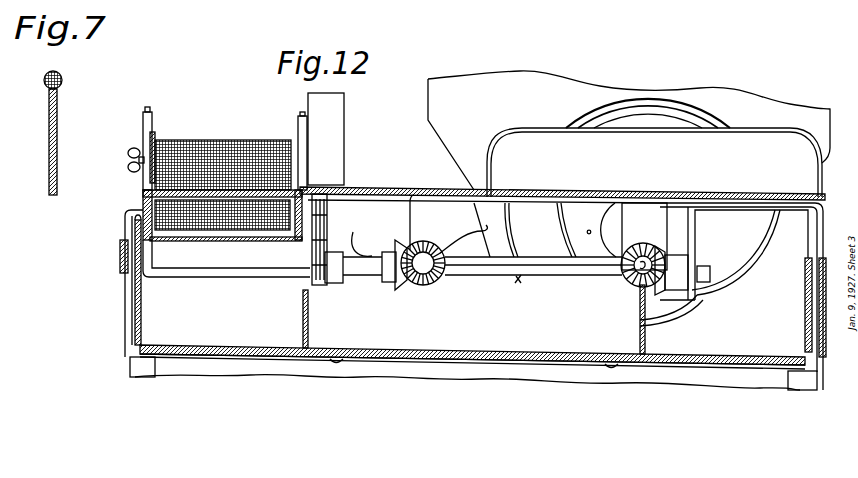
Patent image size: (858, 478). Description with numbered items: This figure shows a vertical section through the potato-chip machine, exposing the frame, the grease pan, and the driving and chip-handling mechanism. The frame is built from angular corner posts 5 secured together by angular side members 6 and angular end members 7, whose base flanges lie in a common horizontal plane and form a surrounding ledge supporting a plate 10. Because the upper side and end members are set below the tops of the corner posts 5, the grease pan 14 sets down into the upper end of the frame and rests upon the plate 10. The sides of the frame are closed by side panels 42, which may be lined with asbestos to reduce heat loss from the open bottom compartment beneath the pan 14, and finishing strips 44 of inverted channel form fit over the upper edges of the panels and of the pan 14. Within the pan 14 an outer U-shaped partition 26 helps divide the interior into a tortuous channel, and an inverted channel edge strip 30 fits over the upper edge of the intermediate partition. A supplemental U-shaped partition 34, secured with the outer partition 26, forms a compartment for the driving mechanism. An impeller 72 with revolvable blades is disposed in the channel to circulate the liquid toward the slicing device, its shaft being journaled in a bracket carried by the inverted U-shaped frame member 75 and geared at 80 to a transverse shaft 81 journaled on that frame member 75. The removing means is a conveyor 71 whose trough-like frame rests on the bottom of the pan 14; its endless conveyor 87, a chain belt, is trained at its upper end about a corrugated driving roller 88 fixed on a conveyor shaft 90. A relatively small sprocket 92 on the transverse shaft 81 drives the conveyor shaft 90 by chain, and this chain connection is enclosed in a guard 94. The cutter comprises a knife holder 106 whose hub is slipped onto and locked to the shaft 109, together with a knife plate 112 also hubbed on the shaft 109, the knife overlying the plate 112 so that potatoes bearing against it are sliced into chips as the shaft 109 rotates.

In FIG. 12, the corner posts 5 is at (135, 372).
In FIG. 12, the side members 6 is at (126, 344).
In FIG. 12, the end members 7 is at (452, 358).
In FIG. 12, the plate 10 is at (421, 358).
In FIG. 12, the grease pan 14 is at (509, 350).
In FIG. 7, the outer partition 26 is at (57, 146).
In FIG. 7, the edge strip 30 is at (63, 79).
In FIG. 12, the supplemental partition 34 is at (310, 305).
In FIG. 12, the side panels 42 is at (125, 306).
In FIG. 12, the finishing strips 44 is at (119, 256).
In FIG. 12, the conveyor 71 is at (152, 126).
In FIG. 12, the impeller 72 is at (455, 228).
In FIG. 12, the frame member 75 is at (447, 190).
In FIG. 12, the gearing 80 is at (410, 285).
In FIG. 12, the transverse shaft 81 is at (473, 279).
In FIG. 12, the endless conveyor 87 is at (218, 163).
In FIG. 12, the driving roller 88 is at (156, 146).
In FIG. 12, the conveyor shaft 90 is at (128, 156).
In FIG. 12, the sprocket 92 is at (332, 240).
In FIG. 12, the guard 94 is at (338, 118).
In FIG. 12, the knife holder 106 is at (583, 220).
In FIG. 12, the shaft 109 is at (647, 232).
In FIG. 12, the knife plate 112 is at (592, 116).